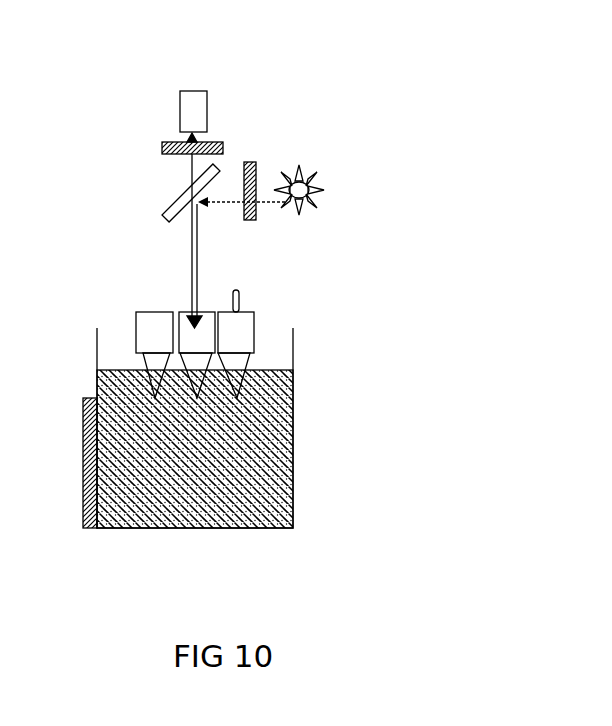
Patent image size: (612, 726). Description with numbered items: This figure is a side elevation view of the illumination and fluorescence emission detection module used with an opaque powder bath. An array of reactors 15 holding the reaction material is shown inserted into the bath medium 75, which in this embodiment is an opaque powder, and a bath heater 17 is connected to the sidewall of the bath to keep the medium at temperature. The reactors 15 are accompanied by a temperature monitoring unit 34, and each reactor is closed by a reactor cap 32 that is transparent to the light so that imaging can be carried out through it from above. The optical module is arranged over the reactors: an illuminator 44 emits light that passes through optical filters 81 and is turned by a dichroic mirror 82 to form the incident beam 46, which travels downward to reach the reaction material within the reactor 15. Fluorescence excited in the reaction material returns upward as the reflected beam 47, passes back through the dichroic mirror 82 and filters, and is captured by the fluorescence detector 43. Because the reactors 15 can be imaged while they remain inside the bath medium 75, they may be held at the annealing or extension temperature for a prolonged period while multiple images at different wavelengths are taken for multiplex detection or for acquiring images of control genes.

The fluorescence detector 43 is at (198, 103).
The optical filters 81 is at (250, 162).
The dichroic mirror 82 is at (163, 212).
The illuminator 44 is at (320, 194).
The incident beam 46 is at (199, 263).
The reflected beam 47 is at (190, 250).
The temperature monitoring unit 34 is at (202, 322).
The reactor caps 32 is at (158, 323).
The reactor 15 is at (142, 367).
The bath medium 75 is at (270, 425).
The bath heater 17 is at (92, 448).